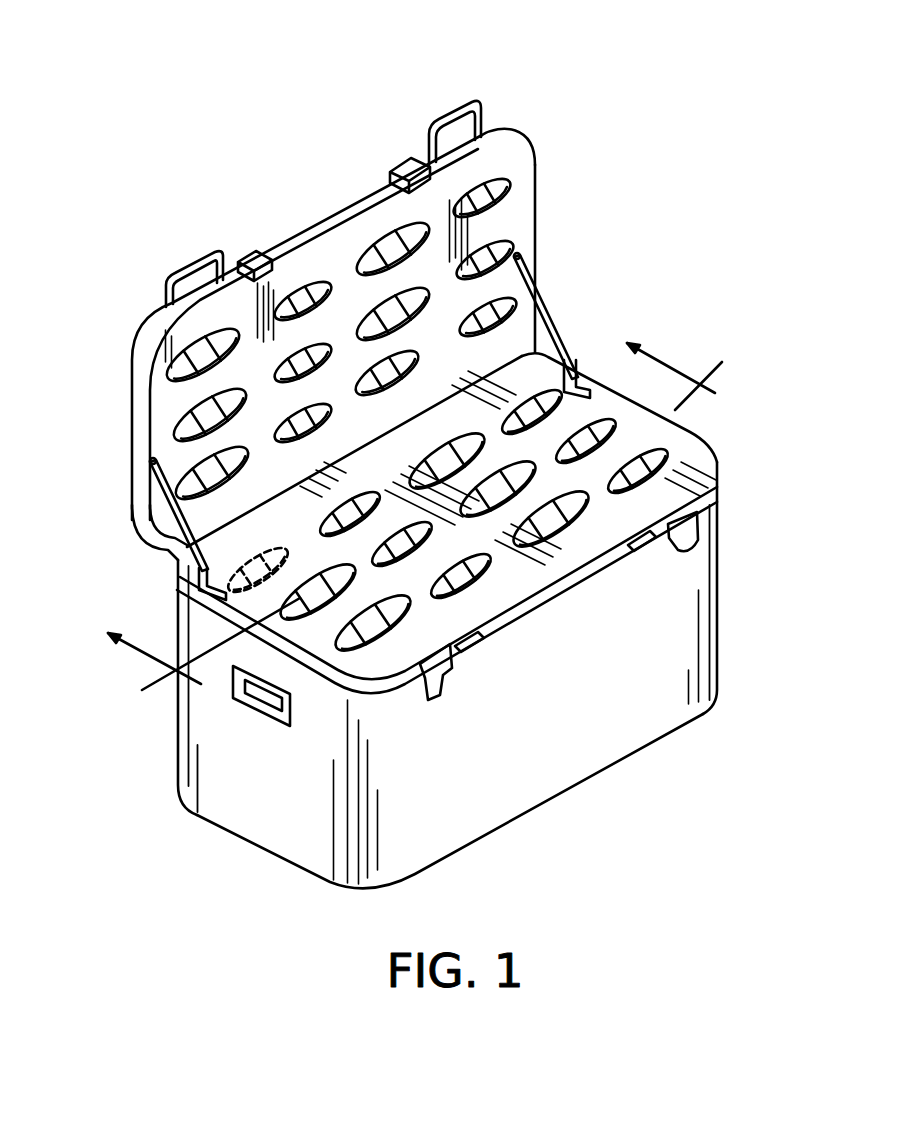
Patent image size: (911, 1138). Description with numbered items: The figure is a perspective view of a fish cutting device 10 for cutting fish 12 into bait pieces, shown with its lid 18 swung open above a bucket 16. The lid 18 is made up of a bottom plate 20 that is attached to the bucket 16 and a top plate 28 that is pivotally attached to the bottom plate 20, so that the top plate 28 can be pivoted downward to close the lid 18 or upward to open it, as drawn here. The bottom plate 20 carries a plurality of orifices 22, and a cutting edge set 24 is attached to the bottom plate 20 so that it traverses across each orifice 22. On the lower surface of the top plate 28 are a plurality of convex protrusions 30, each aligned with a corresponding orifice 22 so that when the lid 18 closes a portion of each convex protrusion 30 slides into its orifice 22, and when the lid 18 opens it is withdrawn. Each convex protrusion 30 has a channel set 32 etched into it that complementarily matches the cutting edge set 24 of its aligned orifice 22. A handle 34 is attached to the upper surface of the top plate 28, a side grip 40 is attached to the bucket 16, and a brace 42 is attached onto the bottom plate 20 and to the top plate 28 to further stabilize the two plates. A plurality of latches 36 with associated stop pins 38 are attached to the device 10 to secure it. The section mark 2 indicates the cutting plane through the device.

The fish cutting device 10 is at (216, 164).
The fish 12 is at (187, 567).
The bucket 16 is at (262, 818).
The lid 18 is at (523, 124).
The bottom plate 20 is at (705, 440).
The orifice 22 is at (290, 636).
The cutting edge set 24 is at (640, 447).
The top plate 28 is at (522, 160).
The convex protrusion 30 is at (333, 287).
The channel set 32 is at (290, 278).
The handle 34 is at (213, 250).
The latch 36 is at (406, 158).
The stop pin 38 is at (462, 640).
The side grip 40 is at (258, 702).
The brace 42 is at (566, 320).
The section line of FIG. 2 is at (413, 506).